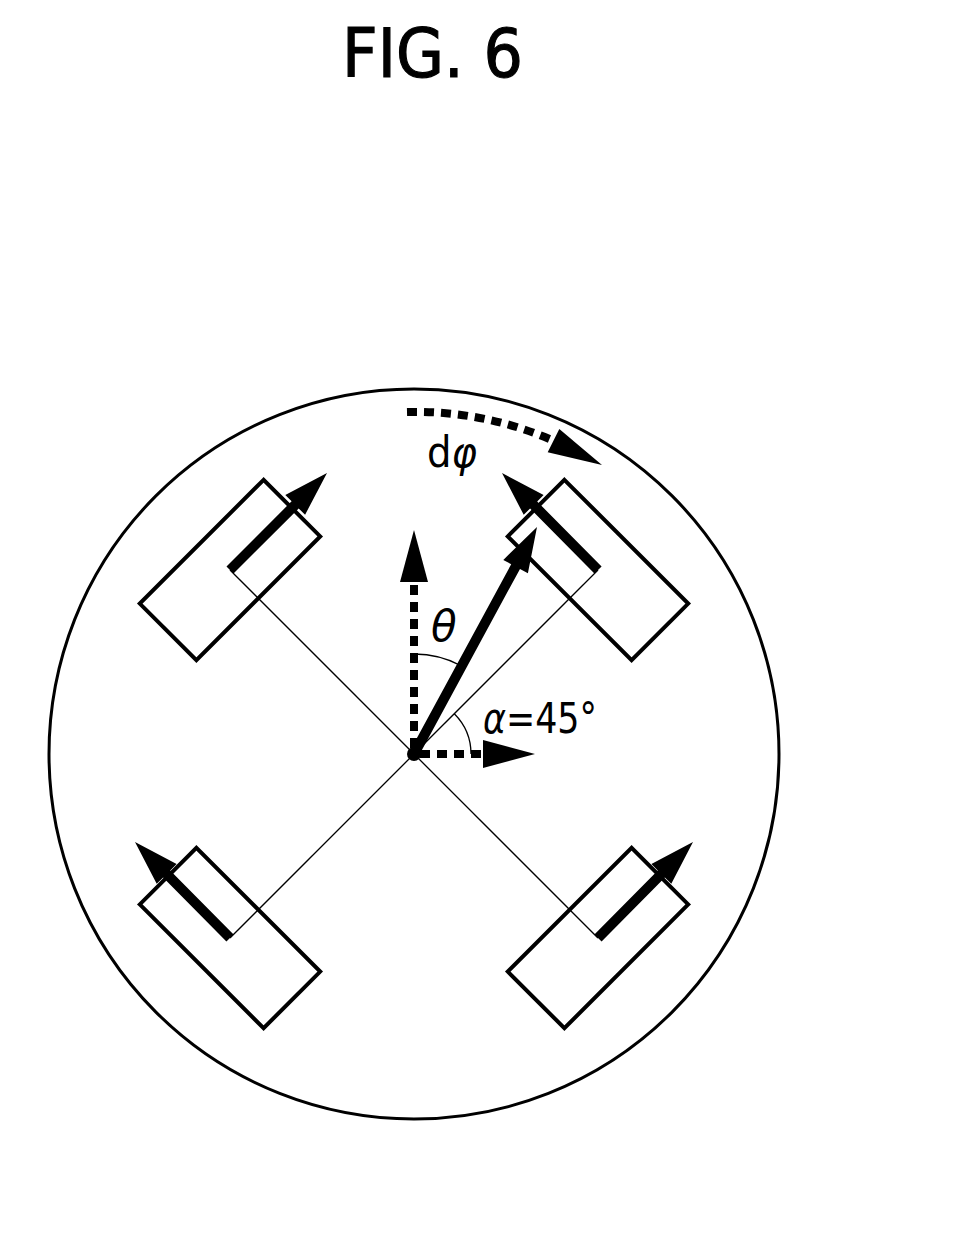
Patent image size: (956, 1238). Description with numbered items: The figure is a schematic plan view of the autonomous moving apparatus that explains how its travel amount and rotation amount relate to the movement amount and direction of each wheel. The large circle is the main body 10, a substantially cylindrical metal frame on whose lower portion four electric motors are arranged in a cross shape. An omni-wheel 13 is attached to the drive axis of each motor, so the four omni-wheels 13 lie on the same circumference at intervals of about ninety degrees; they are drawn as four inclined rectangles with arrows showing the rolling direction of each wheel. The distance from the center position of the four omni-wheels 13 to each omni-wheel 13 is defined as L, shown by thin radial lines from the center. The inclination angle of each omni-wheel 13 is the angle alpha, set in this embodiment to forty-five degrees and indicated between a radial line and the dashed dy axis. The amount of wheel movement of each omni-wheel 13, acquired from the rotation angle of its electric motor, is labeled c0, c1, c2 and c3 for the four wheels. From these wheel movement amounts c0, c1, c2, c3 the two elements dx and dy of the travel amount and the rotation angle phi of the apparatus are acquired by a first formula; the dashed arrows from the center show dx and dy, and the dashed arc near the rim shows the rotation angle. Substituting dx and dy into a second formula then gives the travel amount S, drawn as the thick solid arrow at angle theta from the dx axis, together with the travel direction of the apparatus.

The main body 10 is at (778, 727).
The omni-wheels 13 is at (419, 793).
The amount of wheel movement of omni-wheel c0 is at (233, 566).
The amount of wheel movement of omni-wheel c1 is at (595, 566).
The amount of wheel movement of omni-wheel c2 is at (600, 935).
The amount of wheel movement of omni-wheel c3 is at (227, 935).
The distance from center position to omni-wheel L is at (414, 754).
The travel amount S is at (473, 632).
The element of travel amount dx is at (399, 625).
The element of travel amount dy is at (499, 773).